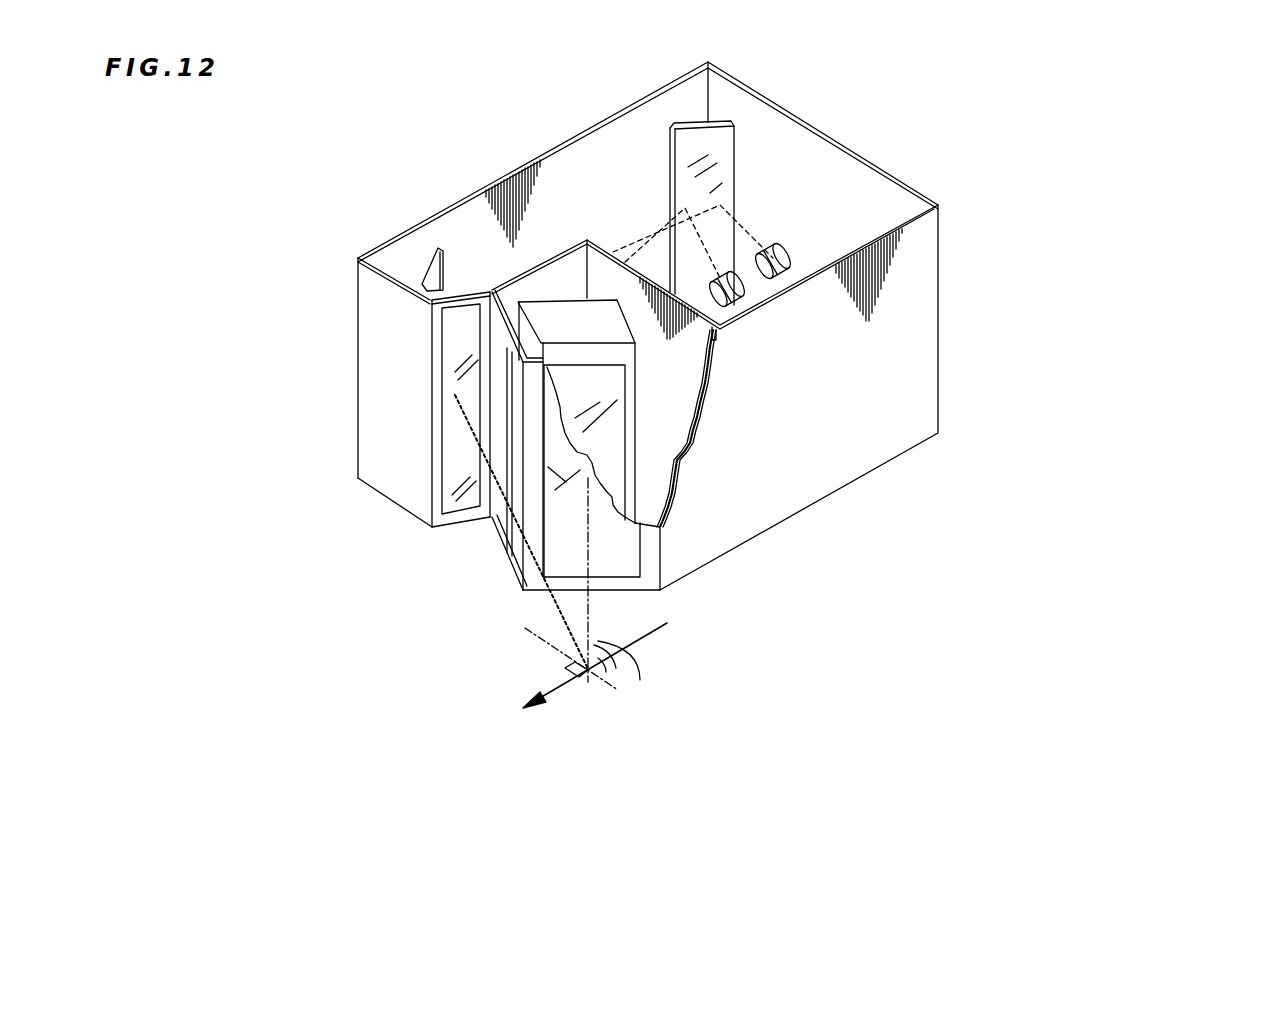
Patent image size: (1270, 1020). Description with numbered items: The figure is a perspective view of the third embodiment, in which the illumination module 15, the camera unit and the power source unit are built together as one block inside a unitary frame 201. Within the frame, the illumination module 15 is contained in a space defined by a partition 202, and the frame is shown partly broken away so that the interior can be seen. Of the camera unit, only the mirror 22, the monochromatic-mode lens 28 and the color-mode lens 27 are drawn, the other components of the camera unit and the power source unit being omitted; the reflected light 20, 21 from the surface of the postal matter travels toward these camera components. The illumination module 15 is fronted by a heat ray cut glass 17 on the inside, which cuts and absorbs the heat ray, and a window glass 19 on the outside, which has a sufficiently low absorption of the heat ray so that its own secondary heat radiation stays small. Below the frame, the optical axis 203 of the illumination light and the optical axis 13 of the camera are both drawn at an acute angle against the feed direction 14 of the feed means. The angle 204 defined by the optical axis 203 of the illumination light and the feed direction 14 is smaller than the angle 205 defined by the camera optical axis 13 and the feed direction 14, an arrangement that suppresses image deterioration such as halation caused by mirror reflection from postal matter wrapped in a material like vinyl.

The optical axis of the camera 13 is at (573, 613).
The feed direction 14 is at (553, 690).
The illumination module 15 is at (536, 376).
The heat ray cut glass 17 is at (633, 410).
The window glass 19 is at (560, 508).
The reflected light 20 is at (541, 123).
The reflected light 21 is at (662, 235).
The mirror 22 is at (820, 92).
The color-mode lens 27 is at (740, 283).
The monochromatic-mode lens 28 is at (826, 205).
The unitary frame 201 is at (907, 343).
The partition 202 is at (450, 321).
The optical axis of the illumination light 203 is at (590, 612).
The angle defined by optical axis of illumination light and feed direction 204 is at (625, 668).
The angle defined by camera optical axis and feed direction 205 is at (600, 641).